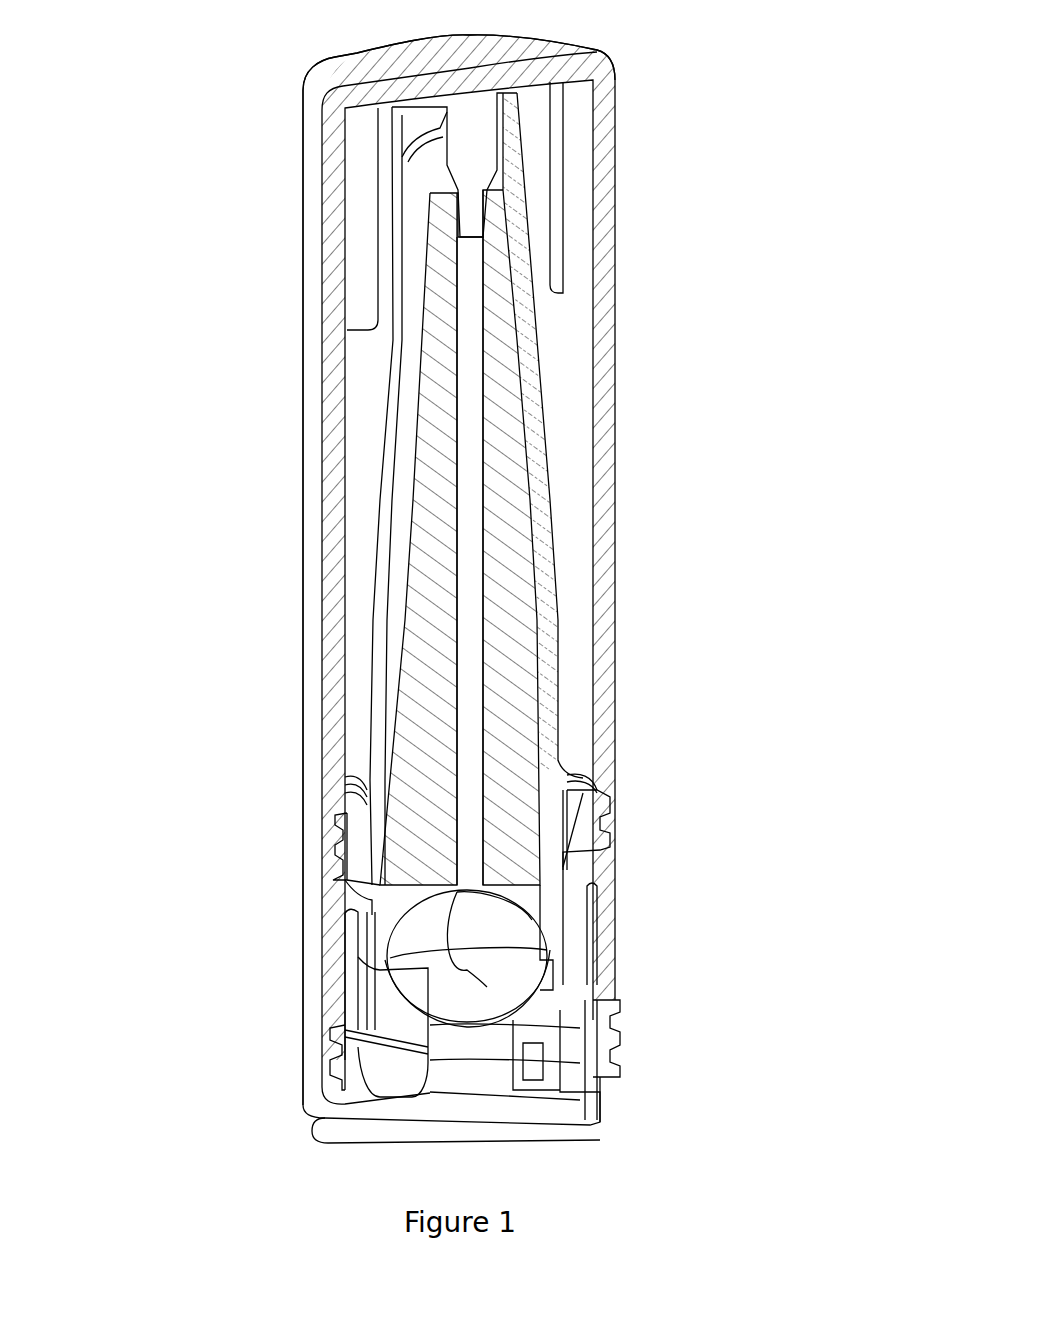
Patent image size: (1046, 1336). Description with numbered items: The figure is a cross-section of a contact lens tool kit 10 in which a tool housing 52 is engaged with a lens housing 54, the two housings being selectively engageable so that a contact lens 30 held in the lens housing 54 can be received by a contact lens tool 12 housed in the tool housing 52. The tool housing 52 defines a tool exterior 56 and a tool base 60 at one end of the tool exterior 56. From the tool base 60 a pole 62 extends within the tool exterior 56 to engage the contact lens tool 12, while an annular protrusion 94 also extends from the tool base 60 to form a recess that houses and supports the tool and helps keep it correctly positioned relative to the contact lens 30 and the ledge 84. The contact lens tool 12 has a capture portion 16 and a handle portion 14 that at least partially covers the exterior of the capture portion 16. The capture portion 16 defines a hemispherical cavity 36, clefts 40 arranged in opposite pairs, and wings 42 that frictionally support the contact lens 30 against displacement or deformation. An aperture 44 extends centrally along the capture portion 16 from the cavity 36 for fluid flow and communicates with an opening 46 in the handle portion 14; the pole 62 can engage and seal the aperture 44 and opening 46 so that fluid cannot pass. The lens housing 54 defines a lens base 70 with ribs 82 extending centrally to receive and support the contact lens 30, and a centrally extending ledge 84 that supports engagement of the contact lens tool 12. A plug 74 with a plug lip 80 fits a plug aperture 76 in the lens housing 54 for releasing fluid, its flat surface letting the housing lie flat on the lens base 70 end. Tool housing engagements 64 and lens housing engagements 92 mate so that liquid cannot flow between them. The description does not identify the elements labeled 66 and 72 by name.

The contact lens tool kit 10 is at (14, 399).
The contact lens tool 12 is at (379, 443).
The handle portion 14 is at (532, 372).
The capture portion 16 is at (510, 440).
The contact lens 30 is at (477, 1000).
The hemispherical cavity 36 is at (497, 922).
The cleft 40 is at (457, 907).
The wing 42 is at (493, 967).
The aperture 44 is at (470, 497).
The opening 46 is at (497, 170).
The tool housing 52 is at (298, 617).
The lens housing 54 is at (298, 1012).
The tool exterior 56 is at (303, 545).
The tool base 60 is at (353, 63).
The pole 62 is at (468, 205).
The tool housing engagements 64 is at (335, 855).
The neck 66 is at (308, 1031).
The lens base 70 is at (397, 1031).
The thread 72 is at (560, 1023).
The plug 74 is at (545, 1124).
The plug aperture 76 is at (605, 1050).
The plug lip 80 is at (322, 1127).
The rib 82 is at (548, 988).
The ledge 84 is at (365, 900).
The lens housing engagements 92 is at (333, 832).
The protrusion 94 is at (558, 236).